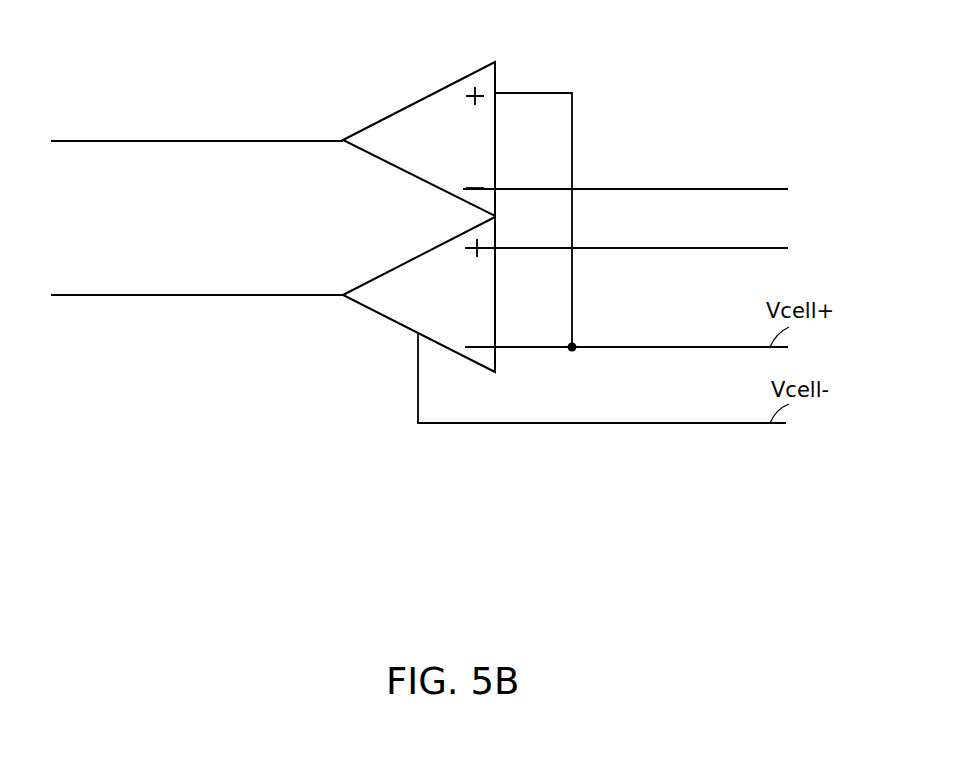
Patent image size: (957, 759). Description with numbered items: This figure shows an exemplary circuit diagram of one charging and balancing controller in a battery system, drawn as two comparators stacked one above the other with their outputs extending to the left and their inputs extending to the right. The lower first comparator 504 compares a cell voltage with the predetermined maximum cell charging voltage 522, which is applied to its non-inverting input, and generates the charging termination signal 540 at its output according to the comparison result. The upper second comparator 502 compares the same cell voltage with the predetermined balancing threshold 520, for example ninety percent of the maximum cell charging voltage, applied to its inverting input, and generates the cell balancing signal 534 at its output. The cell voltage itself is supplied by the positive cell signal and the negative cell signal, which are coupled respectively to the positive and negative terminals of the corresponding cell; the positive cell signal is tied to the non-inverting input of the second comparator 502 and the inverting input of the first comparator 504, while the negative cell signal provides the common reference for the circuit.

The second comparator 502 is at (378, 119).
The first comparator 504 is at (379, 275).
The cell balancing signal 534 is at (78, 141).
The charging termination signal 540 is at (78, 295).
The predetermined balancing threshold 520 is at (770, 189).
The predetermined maximum cell charging voltage 522 is at (770, 248).